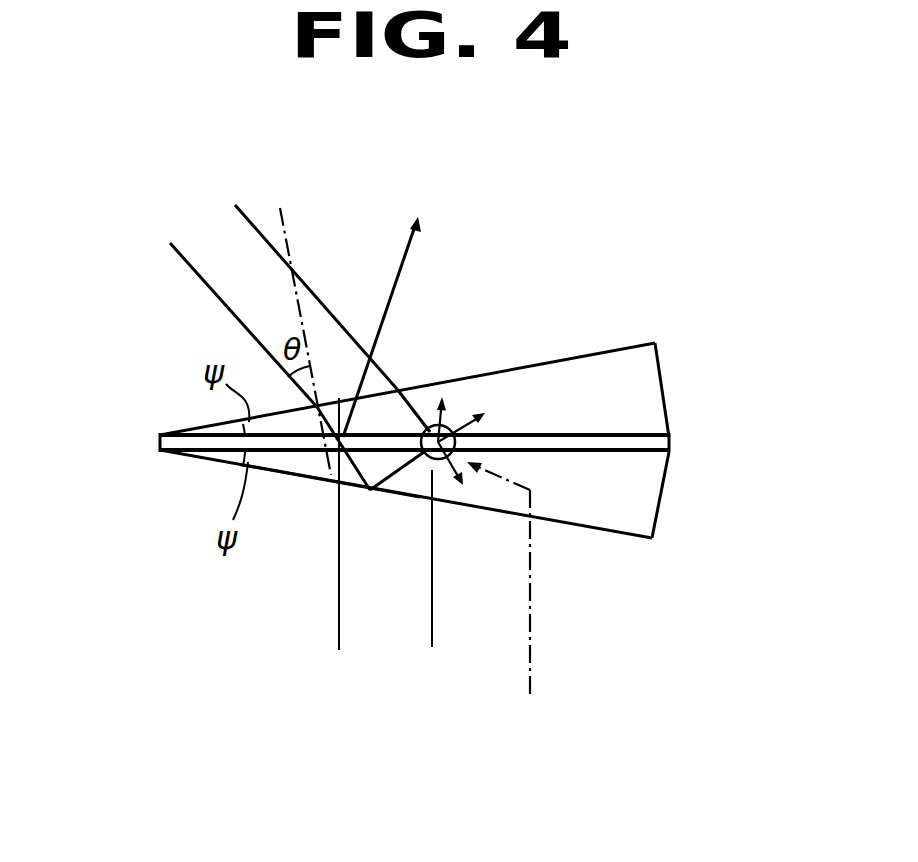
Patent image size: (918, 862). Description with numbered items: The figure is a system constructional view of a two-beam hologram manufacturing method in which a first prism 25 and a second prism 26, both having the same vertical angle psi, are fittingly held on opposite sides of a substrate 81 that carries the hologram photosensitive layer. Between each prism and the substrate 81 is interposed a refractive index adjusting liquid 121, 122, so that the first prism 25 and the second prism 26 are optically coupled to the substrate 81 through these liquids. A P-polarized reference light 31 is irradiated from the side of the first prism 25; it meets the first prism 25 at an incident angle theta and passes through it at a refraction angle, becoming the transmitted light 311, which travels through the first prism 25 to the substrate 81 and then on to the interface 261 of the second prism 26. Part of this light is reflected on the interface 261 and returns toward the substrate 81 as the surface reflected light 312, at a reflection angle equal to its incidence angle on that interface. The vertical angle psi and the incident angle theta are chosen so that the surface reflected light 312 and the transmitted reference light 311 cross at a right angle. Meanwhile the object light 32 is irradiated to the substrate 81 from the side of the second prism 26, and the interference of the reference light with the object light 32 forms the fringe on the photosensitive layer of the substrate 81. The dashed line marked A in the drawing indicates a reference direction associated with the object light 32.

The reference light 31 is at (311, 288).
The transmitted light 311 is at (426, 430).
The surface reflected light 312 is at (405, 470).
The object light 32 is at (437, 467).
The first prism 25 is at (620, 368).
The second prism 26 is at (608, 517).
The interface 261 is at (295, 477).
The substrate 81 is at (667, 442).
The refractive index adjusting liquid 121 is at (637, 432).
The refractive index adjusting liquid 122 is at (622, 452).
The viewing direction axis A is at (503, 603).